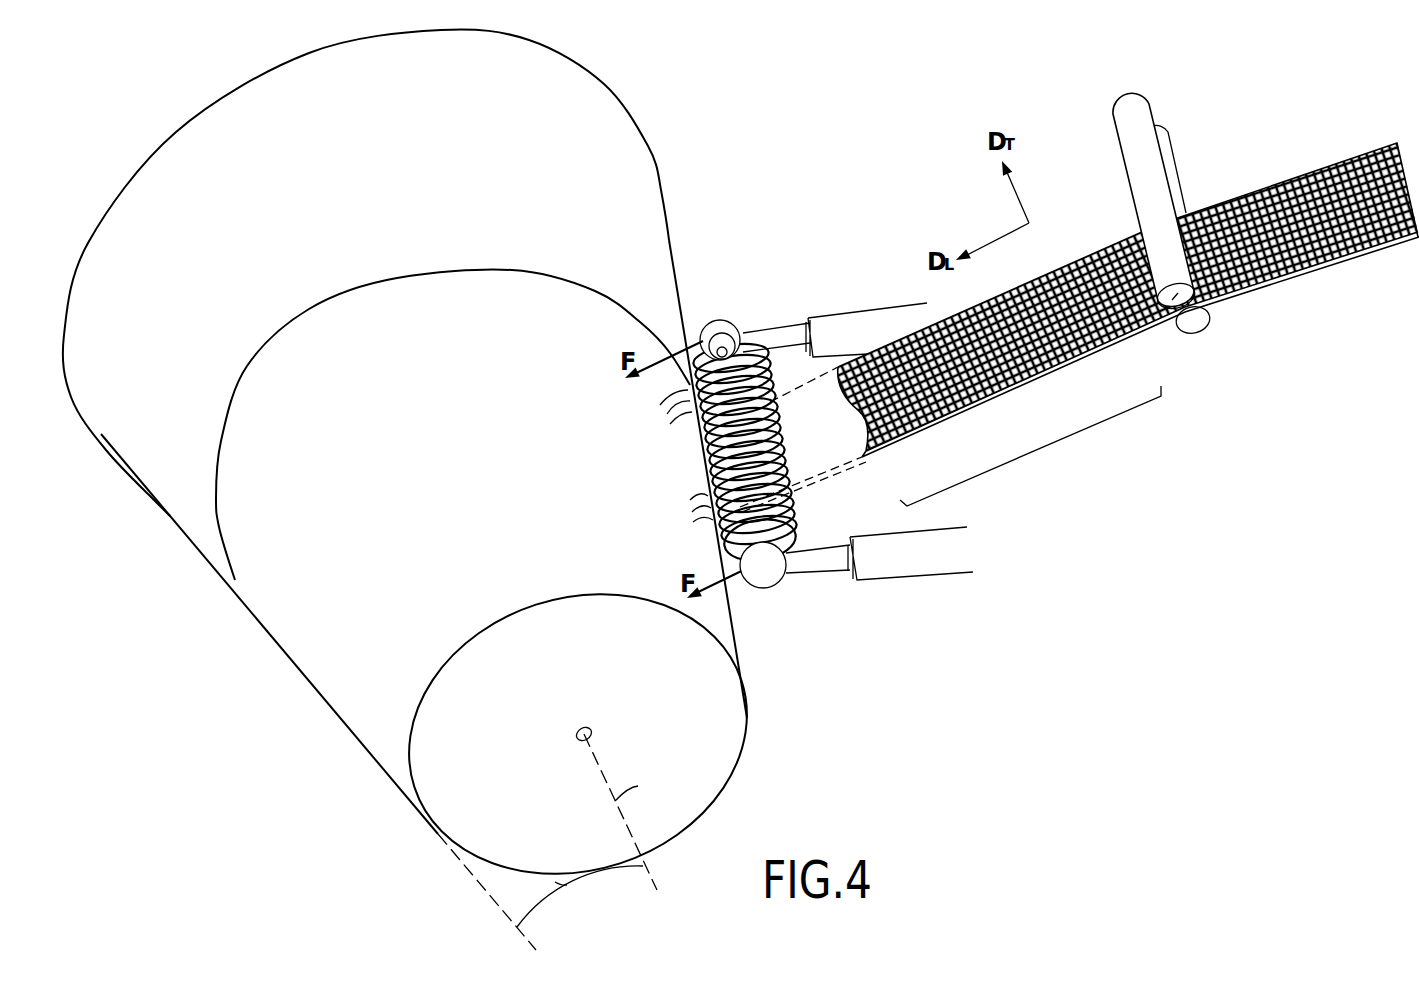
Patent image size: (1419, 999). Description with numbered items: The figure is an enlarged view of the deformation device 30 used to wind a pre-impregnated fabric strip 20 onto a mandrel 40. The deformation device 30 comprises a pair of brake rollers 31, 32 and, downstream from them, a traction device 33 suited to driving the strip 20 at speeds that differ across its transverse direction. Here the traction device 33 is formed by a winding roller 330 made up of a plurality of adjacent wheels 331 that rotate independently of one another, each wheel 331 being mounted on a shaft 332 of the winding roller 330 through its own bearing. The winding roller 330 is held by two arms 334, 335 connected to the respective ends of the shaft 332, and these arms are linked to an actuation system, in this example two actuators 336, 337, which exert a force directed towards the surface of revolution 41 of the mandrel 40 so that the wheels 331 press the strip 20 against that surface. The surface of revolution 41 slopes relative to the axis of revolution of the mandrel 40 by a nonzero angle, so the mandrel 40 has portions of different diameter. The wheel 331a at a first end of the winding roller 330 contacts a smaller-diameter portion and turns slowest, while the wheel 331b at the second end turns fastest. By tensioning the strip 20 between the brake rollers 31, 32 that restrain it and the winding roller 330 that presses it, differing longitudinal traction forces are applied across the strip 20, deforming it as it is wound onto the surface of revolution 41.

The pre-impregnated fabric strip 20 is at (1273, 196).
The deformation device 30 is at (1033, 460).
The brake roller 31 is at (1172, 300).
The brake roller 32 is at (1188, 324).
The traction device 33 is at (787, 460).
The mandrel 40 is at (268, 662).
The surface of revolution 41 is at (349, 694).
The winding roller 330 is at (698, 465).
The wheels 331 is at (672, 461).
The wheel at first end 331a is at (793, 535).
The wheel at second end 331b is at (778, 338).
The shaft 332 is at (712, 327).
The arm 334 is at (812, 568).
The arm 335 is at (745, 330).
The actuator 336 is at (927, 566).
The actuator 337 is at (840, 322).